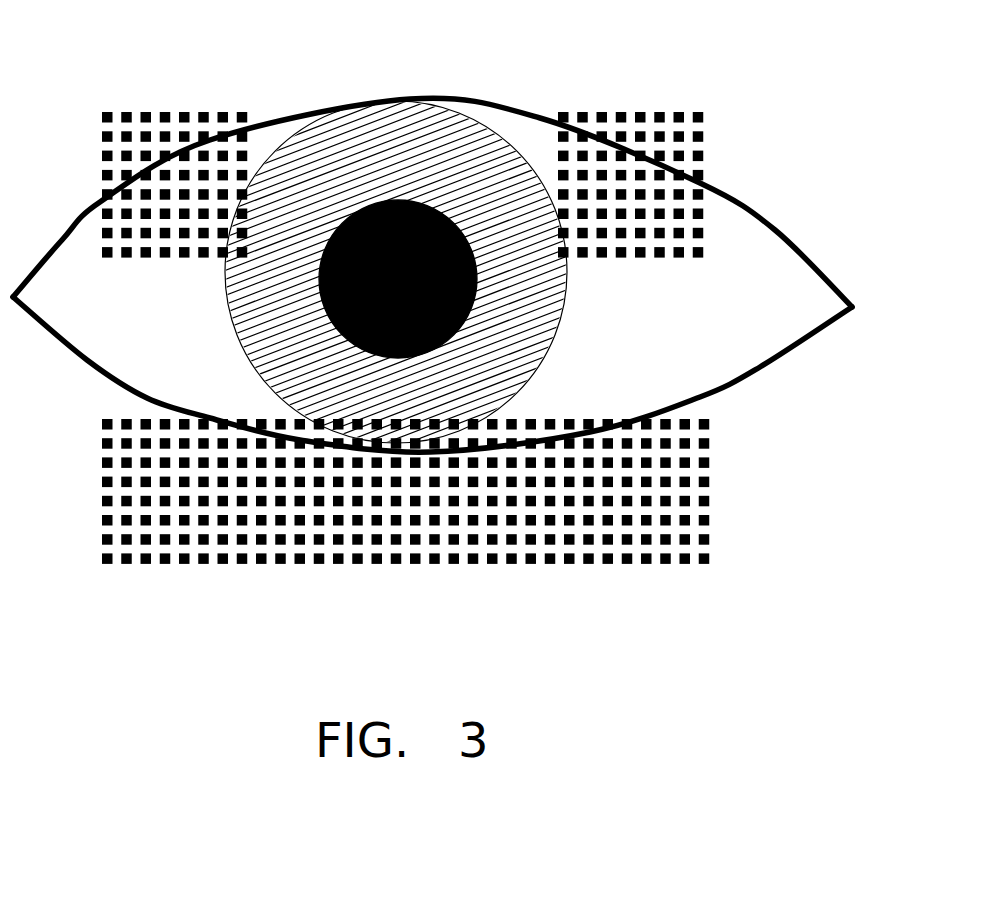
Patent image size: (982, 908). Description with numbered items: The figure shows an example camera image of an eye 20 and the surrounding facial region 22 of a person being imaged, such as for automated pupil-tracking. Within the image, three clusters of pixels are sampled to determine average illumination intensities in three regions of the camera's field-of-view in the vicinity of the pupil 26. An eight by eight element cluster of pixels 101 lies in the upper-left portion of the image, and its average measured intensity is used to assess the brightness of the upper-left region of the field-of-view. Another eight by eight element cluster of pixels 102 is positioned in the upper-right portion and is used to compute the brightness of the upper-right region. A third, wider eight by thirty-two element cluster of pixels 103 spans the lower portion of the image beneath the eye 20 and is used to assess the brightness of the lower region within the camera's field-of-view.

The eye 20 is at (750, 210).
The surrounding facial region 22 is at (792, 408).
The pupil 26 is at (393, 199).
The cluster of pixels 101 is at (177, 107).
The cluster of pixels 102 is at (628, 108).
The cluster of pixels 103 is at (405, 566).